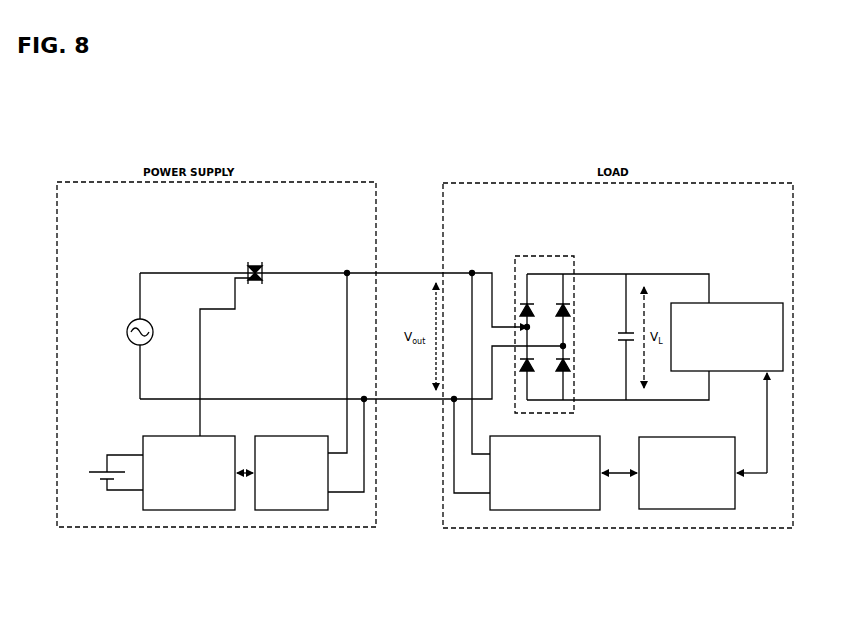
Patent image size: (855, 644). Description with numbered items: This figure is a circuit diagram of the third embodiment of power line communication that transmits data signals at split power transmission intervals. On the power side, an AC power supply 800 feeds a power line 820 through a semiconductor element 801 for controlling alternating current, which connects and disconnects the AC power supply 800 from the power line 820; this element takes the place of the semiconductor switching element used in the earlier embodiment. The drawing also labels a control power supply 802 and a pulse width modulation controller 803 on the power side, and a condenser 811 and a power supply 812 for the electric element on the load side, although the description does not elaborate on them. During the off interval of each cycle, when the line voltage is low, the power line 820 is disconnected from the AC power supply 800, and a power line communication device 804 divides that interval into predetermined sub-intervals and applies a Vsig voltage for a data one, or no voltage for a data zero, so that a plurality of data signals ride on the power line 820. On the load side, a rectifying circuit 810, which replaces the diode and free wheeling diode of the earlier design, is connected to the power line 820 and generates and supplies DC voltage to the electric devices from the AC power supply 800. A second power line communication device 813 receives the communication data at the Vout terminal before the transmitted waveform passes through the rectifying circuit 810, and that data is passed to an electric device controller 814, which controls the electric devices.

The AC power supply 800 is at (128, 302).
The semiconductor element for controlling alternating current 801 is at (258, 192).
The control power supply 802 is at (109, 502).
The pulse width modulation controller 803 is at (200, 514).
The power line communication device 804 is at (293, 514).
The rectifying circuit 810 is at (537, 220).
The condenser 811 is at (613, 318).
The power supply for electric element 812 is at (726, 300).
The power line communication device 813 is at (568, 514).
The electric device controller 814 is at (677, 513).
The power line 820 is at (382, 265).